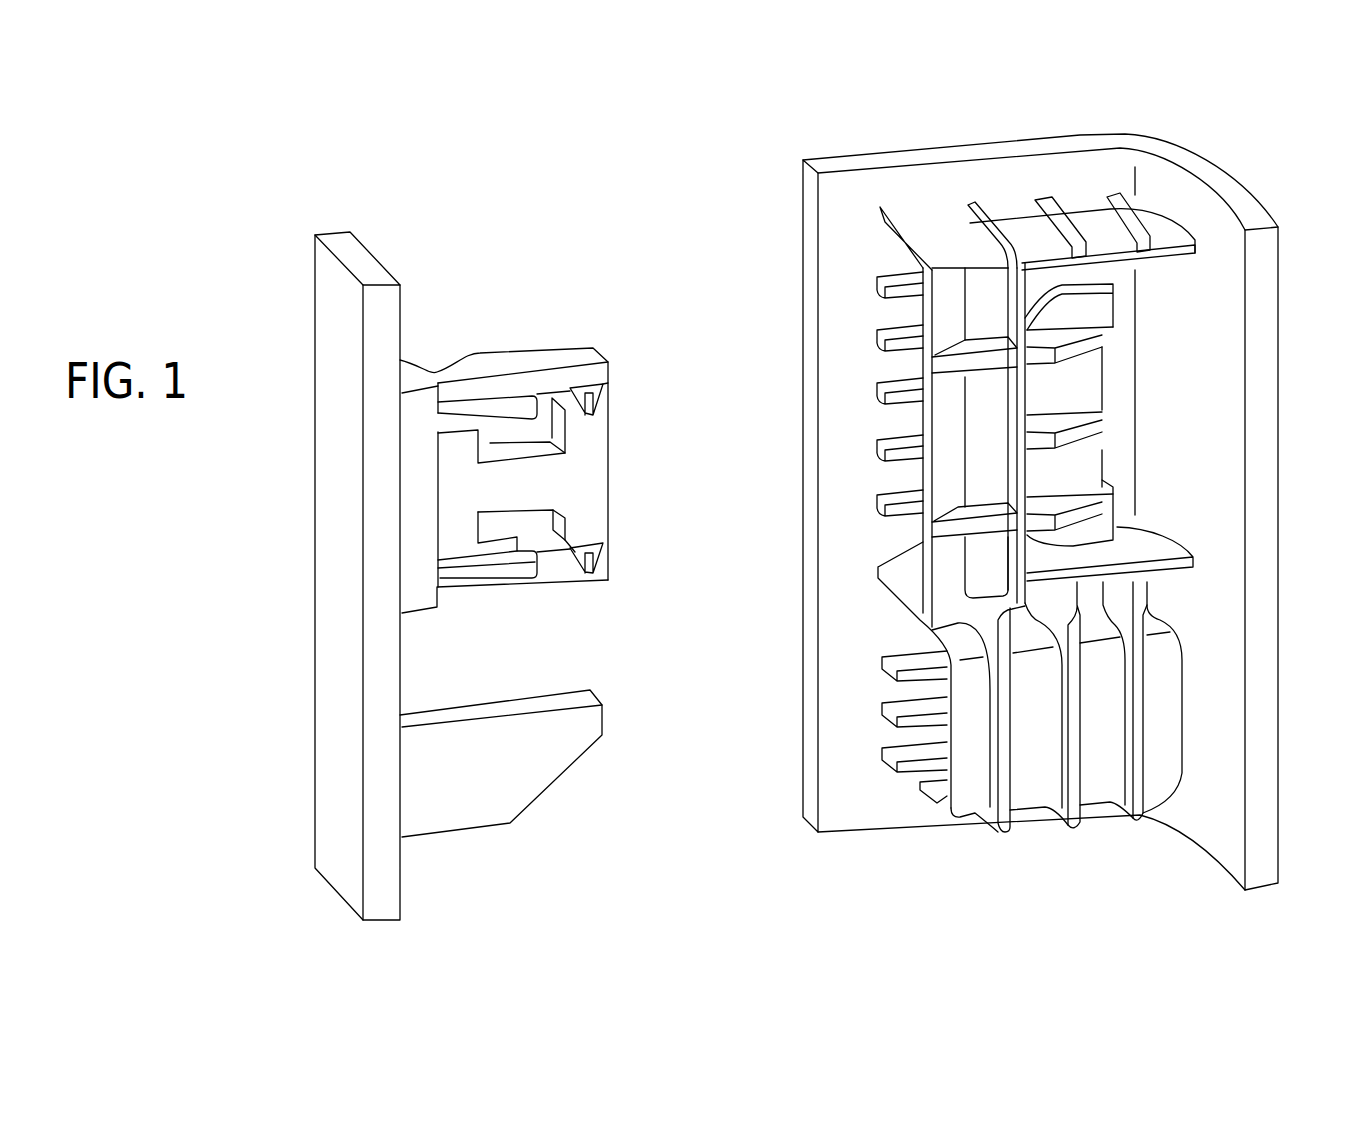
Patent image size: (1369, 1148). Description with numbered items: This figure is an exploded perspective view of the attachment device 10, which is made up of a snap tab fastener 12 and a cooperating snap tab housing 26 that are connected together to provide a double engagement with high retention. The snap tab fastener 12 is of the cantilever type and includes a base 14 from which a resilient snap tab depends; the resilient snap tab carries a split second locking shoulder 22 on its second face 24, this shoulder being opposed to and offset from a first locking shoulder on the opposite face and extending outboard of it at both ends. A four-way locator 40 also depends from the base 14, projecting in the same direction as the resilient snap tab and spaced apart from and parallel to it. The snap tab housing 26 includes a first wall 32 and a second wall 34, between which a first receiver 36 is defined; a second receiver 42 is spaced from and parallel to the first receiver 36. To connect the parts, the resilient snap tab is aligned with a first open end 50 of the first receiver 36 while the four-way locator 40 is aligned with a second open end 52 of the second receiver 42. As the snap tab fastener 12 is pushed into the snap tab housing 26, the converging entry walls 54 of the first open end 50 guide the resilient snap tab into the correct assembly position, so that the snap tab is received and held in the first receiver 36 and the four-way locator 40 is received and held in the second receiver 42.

The attachment device 10 is at (270, 212).
The snap tab fastener 12 is at (575, 848).
The base 14 is at (375, 687).
The second locking shoulder 22 is at (595, 402).
The second face 24 is at (588, 473).
The snap tab housing 26 is at (635, 288).
The first wall 32 is at (1080, 138).
The second wall 34 is at (1055, 468).
The first receiver 36 is at (872, 308).
The four-way locator 40 is at (501, 796).
The second receiver 42 is at (877, 773).
The first open end 50 is at (920, 228).
The second open end 52 is at (937, 798).
The converging entry walls 54 is at (943, 312).